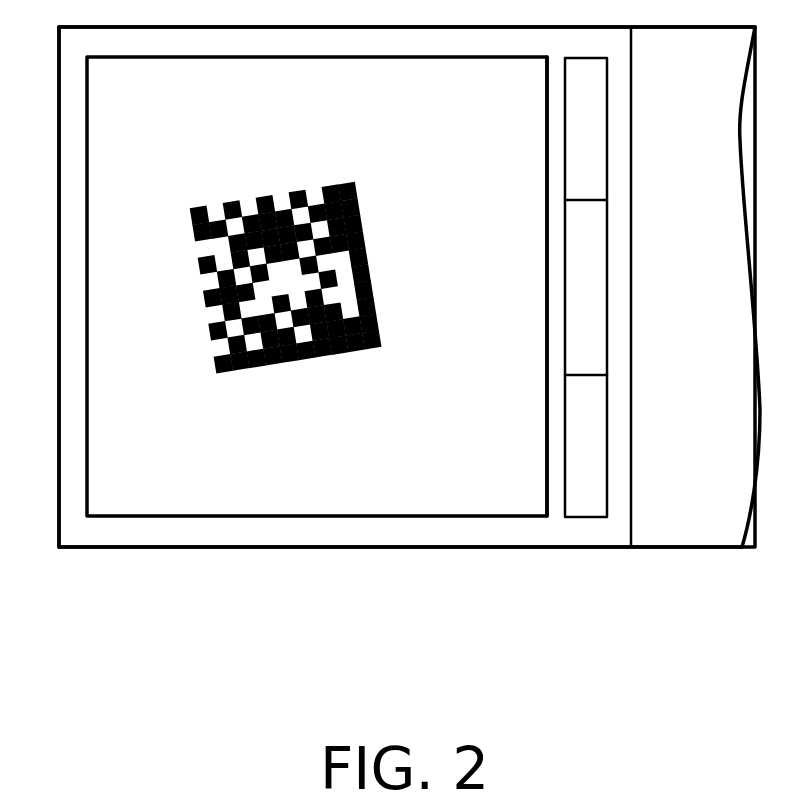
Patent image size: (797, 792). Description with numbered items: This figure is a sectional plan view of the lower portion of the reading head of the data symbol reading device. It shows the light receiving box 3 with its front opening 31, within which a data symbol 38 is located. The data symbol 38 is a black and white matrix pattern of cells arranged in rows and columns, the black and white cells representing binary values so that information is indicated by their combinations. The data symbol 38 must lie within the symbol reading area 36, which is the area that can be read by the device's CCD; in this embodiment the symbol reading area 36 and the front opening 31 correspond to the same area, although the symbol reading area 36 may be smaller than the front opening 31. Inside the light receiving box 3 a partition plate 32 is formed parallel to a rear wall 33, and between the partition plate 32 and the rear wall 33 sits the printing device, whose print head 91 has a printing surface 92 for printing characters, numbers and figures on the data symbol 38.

The light receiving box 3 is at (260, 547).
The front opening 31 is at (120, 442).
The partition plate 32 is at (552, 467).
The rear wall 33 is at (620, 463).
The symbol reading area 36 is at (97, 155).
The data symbol 38 is at (209, 331).
The print head 91 is at (564, 223).
The printing surface 92 is at (587, 300).